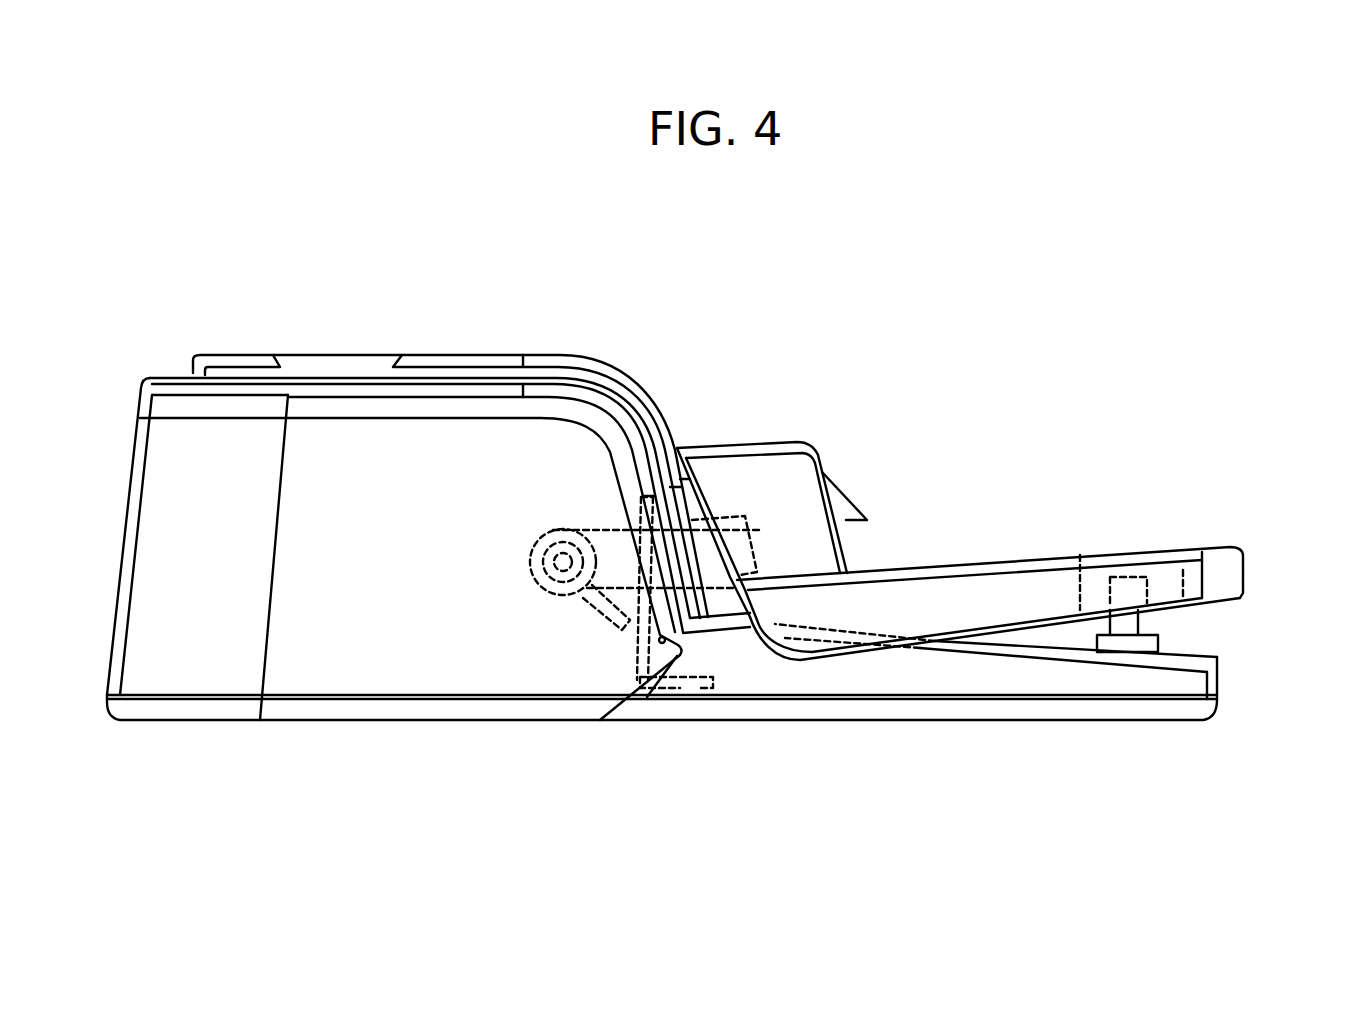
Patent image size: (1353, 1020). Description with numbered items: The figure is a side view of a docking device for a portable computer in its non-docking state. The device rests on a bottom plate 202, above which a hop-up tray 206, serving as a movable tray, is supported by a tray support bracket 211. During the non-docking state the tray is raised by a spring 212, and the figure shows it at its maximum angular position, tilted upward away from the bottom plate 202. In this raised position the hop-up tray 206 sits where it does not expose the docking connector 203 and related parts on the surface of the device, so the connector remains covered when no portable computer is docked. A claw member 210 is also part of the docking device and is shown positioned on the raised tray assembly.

The bottom plate 202 is at (983, 680).
The docking connector 203 is at (1160, 620).
The hop-up tray 206 is at (1218, 538).
The claw member 210 is at (848, 502).
The tray support bracket 211 is at (647, 647).
The spring 212 is at (557, 527).